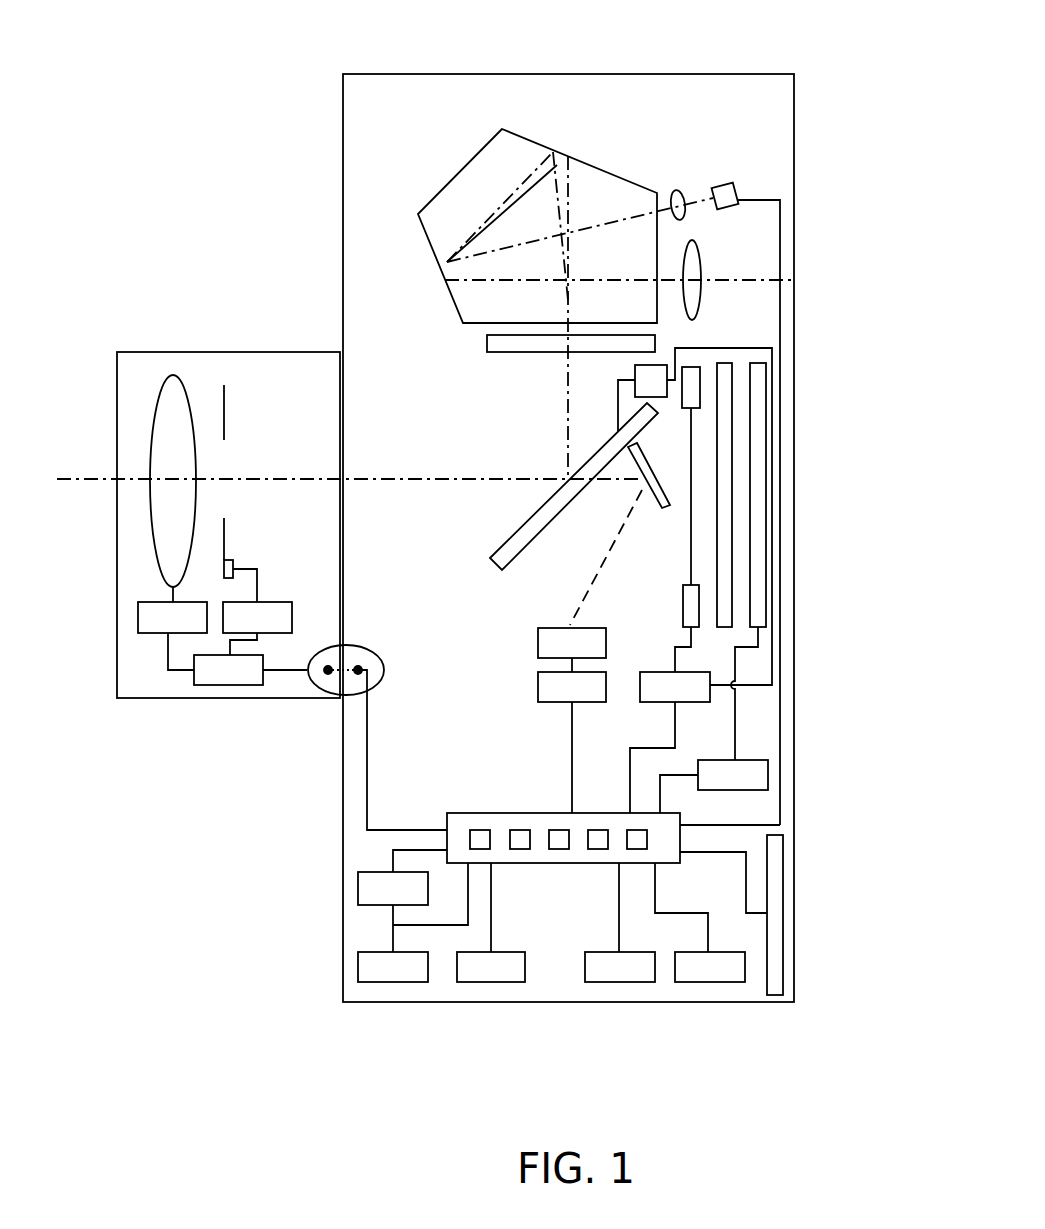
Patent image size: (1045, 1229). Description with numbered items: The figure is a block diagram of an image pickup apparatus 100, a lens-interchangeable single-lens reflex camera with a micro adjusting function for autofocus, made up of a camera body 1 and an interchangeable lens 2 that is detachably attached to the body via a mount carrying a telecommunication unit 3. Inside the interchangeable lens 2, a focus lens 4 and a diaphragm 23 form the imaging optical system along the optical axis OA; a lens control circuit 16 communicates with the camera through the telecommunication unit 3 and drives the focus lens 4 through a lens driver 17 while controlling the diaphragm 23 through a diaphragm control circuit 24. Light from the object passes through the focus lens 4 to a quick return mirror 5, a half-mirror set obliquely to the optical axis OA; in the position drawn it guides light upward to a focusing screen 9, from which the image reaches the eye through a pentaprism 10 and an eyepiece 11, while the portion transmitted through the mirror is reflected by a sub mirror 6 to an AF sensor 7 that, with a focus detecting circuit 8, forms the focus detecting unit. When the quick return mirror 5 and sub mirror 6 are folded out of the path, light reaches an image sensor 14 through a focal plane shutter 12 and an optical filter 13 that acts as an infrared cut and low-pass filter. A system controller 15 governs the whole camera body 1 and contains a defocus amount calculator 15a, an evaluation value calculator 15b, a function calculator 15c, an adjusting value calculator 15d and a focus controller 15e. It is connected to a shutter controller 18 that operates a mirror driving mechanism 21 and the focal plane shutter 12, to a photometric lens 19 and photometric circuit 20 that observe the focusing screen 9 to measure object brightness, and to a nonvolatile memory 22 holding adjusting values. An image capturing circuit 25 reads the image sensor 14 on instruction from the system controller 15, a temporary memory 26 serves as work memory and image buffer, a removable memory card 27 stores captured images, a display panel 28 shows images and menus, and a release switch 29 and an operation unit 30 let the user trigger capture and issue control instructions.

The image pickup apparatus 100 is at (852, 27).
The camera body 1 is at (368, 118).
The interchangeable lens 2 is at (273, 393).
The telecommunication unit 3 is at (320, 663).
The focus lens 4 is at (168, 420).
The quick return mirror 5 is at (527, 533).
The sub mirror 6 is at (631, 448).
The AF sensor 7 is at (553, 648).
The focus detecting circuit 8 is at (543, 693).
The focusing screen 9 is at (503, 343).
The pentaprism 10 is at (446, 214).
The eyepiece 11 is at (691, 260).
The focal plane shutter 12 is at (658, 375).
The optical filter 13 is at (727, 405).
The image sensor 14 is at (758, 418).
The system controller 15 is at (577, 857).
The defocus amount calculator 15a is at (480, 850).
The evaluation value calculator 15b is at (520, 850).
The function calculator 15c is at (559, 850).
The adjusting value calculator 15d is at (597, 850).
The focus controller 15e is at (637, 850).
The lens control circuit 16 is at (210, 670).
The lens driver 17 is at (153, 622).
The shutter controller 18 is at (695, 685).
The photometric lens 19 is at (677, 192).
The photometric circuit 20 is at (725, 190).
The mirror driving mechanism 21 is at (690, 387).
The nonvolatile memory 22 is at (473, 973).
The diaphragm 23 is at (222, 397).
The diaphragm control circuit 24 is at (240, 623).
The image capturing circuit 25 is at (757, 770).
The temporary memory 26 is at (722, 973).
The removable memory card 27 is at (630, 973).
The display panel 28 is at (773, 857).
The release switch 29 is at (368, 897).
The operation unit 30 is at (407, 973).
The optical axis OA is at (83, 481).